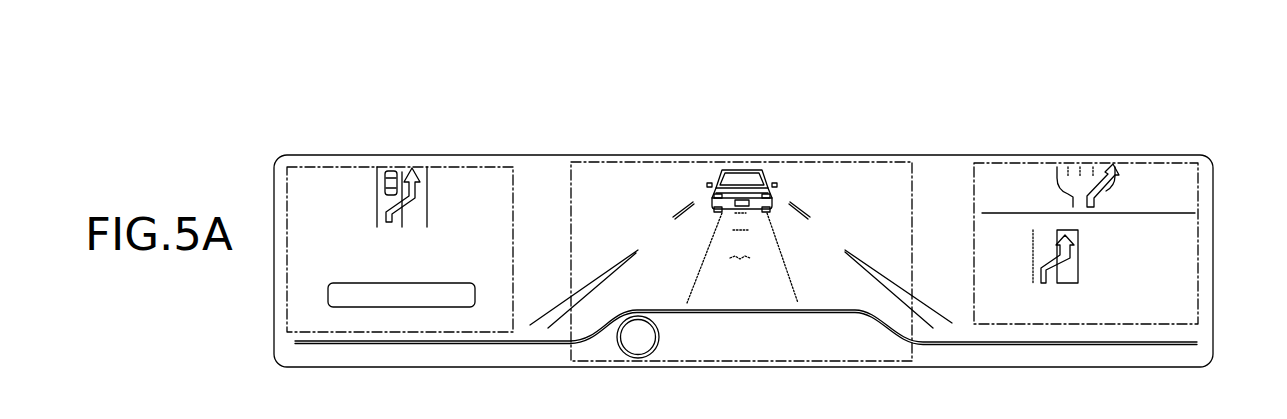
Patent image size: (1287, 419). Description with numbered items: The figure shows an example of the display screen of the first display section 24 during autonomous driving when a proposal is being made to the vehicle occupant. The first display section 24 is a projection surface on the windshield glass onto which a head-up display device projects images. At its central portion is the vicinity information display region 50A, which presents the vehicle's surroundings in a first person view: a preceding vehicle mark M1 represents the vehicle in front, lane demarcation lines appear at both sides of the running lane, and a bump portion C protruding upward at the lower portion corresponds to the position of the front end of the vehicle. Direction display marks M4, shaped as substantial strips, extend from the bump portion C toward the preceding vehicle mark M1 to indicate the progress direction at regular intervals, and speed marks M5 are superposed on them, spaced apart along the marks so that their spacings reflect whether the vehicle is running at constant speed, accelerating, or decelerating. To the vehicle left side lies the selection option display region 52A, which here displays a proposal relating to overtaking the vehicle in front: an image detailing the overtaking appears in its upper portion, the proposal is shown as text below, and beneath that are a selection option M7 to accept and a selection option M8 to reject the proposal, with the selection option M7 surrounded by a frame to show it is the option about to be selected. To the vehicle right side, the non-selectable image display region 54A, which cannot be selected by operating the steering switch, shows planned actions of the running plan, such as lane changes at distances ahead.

The first display section 24 is at (1203, 350).
The vicinity information display region 50A is at (903, 161).
The selection option display region 52A is at (435, 166).
The non-selectable image display region 54A is at (1198, 227).
The preceding vehicle mark M1 is at (708, 190).
The direction display marks M4 is at (697, 265).
The speed marks M5 is at (748, 258).
The selection option M7 is at (360, 295).
The selection option M8 is at (367, 322).
The bump portion C is at (829, 310).